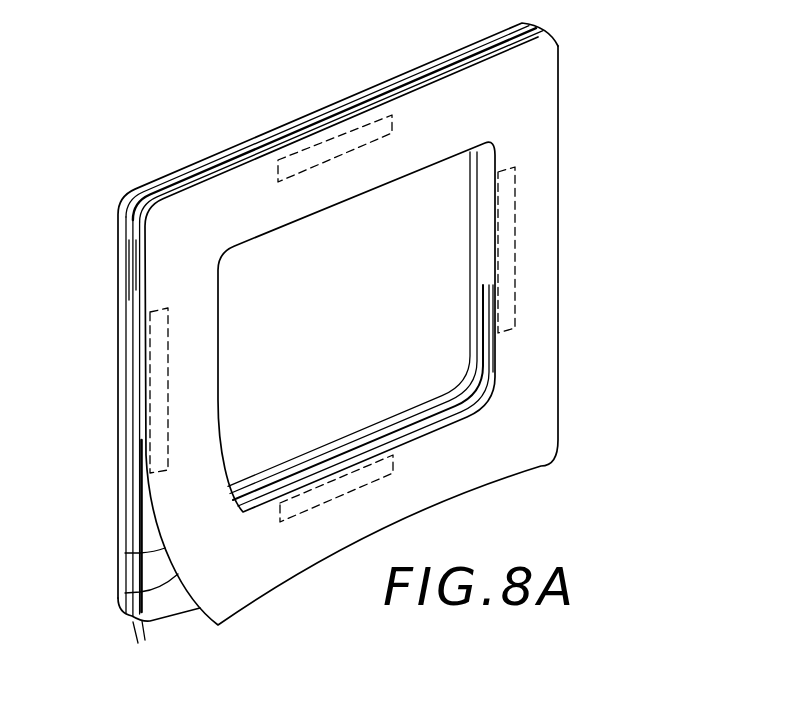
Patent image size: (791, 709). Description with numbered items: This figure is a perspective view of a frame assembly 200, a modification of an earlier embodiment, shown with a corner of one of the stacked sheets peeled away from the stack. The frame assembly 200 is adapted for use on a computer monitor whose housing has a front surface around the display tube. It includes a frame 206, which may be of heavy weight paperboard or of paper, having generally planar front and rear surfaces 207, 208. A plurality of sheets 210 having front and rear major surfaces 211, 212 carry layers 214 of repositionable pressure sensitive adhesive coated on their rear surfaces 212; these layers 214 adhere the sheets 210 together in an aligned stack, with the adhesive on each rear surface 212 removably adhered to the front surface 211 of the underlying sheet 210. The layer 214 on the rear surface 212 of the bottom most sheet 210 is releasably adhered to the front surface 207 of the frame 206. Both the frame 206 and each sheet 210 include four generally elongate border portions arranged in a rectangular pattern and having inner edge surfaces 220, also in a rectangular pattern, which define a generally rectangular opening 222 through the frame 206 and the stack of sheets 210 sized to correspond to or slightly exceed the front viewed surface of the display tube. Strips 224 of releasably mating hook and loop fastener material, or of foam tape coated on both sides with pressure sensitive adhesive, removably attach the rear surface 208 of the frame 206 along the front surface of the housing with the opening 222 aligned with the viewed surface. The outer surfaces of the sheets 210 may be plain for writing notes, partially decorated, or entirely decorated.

The frame assembly 200 is at (355, 349).
The frame 206 is at (223, 152).
The front surface of the frame 207 is at (303, 126).
The rear surface of the frame 208 is at (117, 258).
The sheets 210 is at (207, 614).
The front major surface of the sheet 211 is at (278, 567).
The rear major surface of the sheet 212 is at (125, 593).
The layer of repositionable pressure sensitive adhesive 214 is at (125, 553).
The inner edge surfaces 220 is at (258, 236).
The opening 222 is at (347, 200).
The strips 224 is at (395, 127).